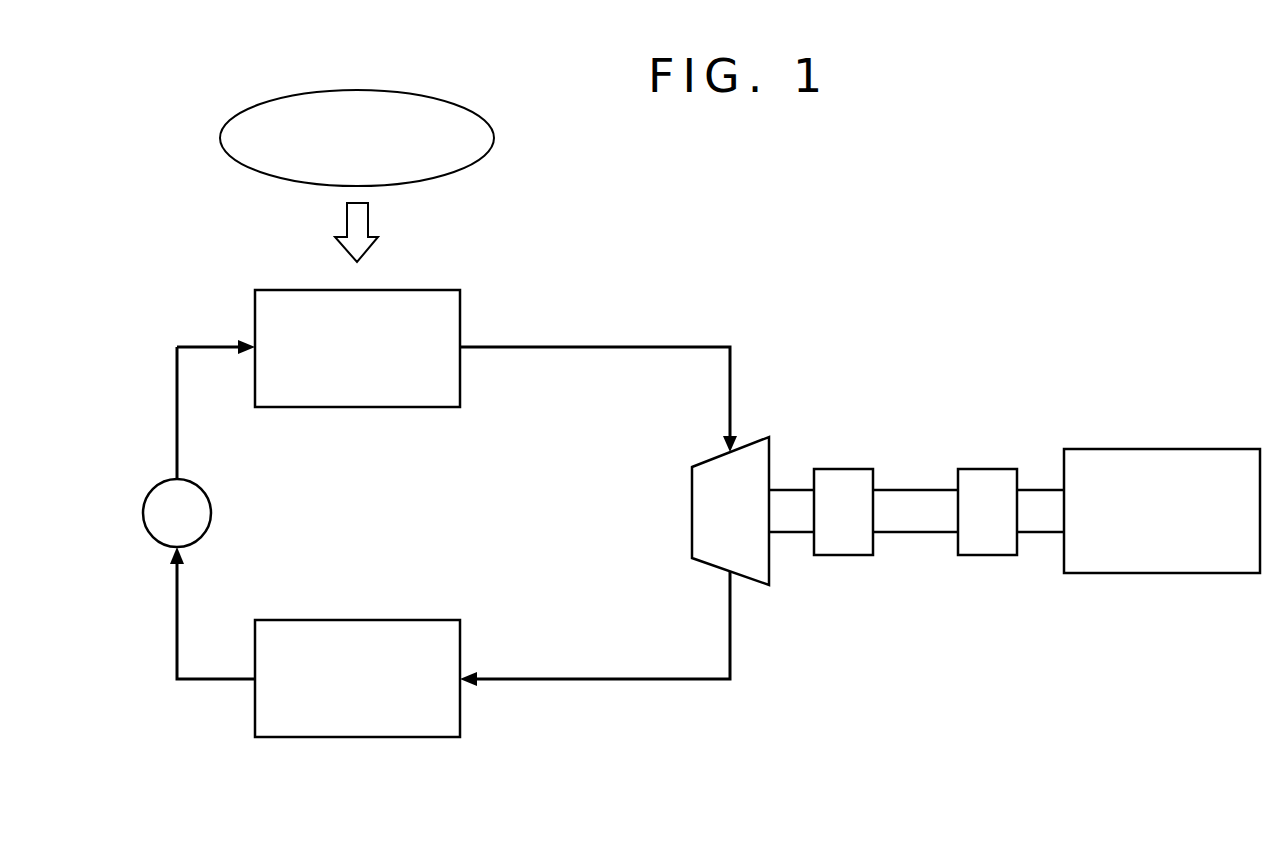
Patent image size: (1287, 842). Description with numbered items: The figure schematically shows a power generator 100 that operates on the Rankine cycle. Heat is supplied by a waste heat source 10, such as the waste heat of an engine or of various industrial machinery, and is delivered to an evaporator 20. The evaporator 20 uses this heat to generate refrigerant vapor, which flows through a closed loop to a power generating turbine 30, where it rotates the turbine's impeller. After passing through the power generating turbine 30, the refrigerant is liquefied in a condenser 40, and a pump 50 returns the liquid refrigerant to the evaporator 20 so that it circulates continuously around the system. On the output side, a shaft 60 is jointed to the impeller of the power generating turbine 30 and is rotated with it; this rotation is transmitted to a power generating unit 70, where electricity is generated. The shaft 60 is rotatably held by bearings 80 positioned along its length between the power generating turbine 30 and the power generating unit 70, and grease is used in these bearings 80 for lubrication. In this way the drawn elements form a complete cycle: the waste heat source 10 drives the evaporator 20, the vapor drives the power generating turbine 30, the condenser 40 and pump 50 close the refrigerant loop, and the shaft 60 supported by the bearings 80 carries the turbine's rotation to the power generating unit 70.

The power generator 100 is at (840, 215).
The waste heat source 10 is at (493, 138).
The evaporator 20 is at (430, 290).
The power generating turbine 30 is at (750, 437).
The condenser 40 is at (357, 618).
The pump 50 is at (143, 503).
The shaft 60 is at (917, 534).
The power generating unit 70 is at (1155, 447).
The bearings 80 is at (973, 468).